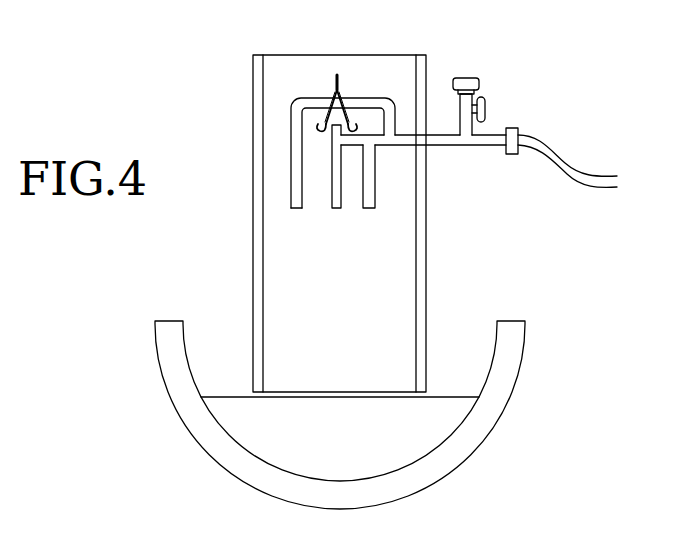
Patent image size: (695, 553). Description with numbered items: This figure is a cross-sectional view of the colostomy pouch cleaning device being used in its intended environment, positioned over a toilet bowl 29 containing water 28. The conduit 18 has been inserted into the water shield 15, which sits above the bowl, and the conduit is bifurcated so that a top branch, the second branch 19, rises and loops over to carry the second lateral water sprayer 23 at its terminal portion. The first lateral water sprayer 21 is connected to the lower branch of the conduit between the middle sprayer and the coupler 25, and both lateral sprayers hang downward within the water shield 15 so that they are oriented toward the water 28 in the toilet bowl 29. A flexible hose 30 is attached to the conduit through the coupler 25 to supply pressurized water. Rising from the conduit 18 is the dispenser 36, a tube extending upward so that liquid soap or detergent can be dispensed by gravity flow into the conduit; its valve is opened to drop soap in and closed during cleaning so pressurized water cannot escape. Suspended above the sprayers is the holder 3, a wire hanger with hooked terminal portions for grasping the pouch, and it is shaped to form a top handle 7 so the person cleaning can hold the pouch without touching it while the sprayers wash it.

The holder 3 is at (327, 120).
The top handle 7 is at (338, 80).
The water shield 15 is at (427, 267).
The conduit 18 is at (455, 147).
The second branch 19 is at (298, 97).
The first lateral water sprayer 21 is at (377, 204).
The second lateral water sprayer 23 is at (291, 188).
The coupler 25 is at (520, 128).
The water 28 is at (420, 413).
The toilet bowl 29 is at (522, 363).
The flexible hose 30 is at (580, 172).
The dispenser 36 is at (474, 133).